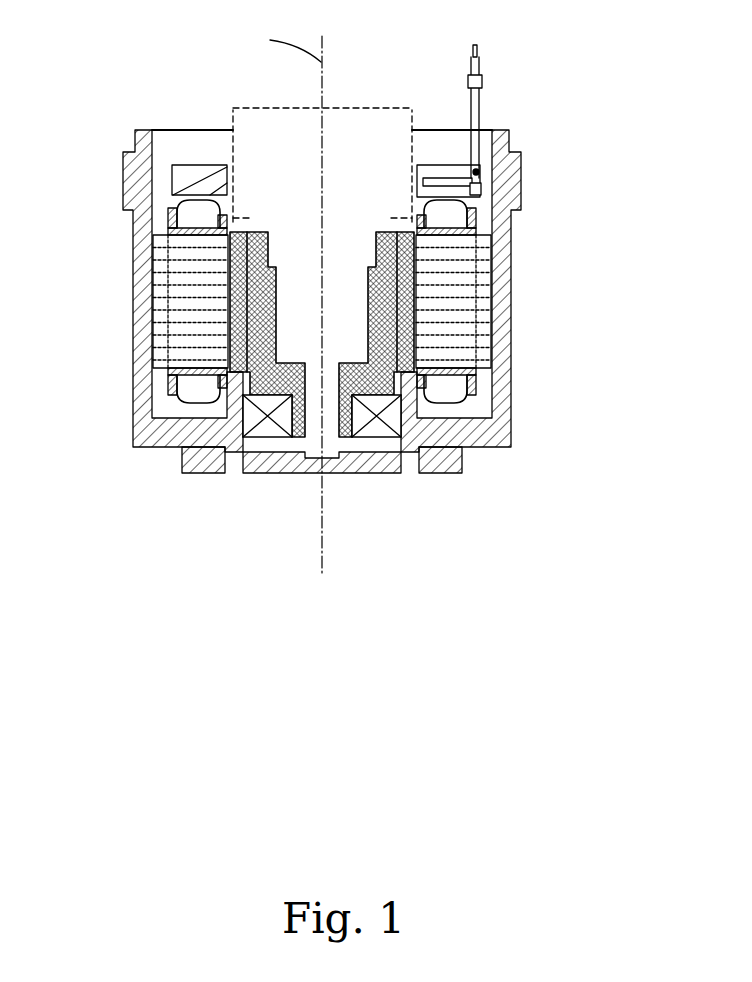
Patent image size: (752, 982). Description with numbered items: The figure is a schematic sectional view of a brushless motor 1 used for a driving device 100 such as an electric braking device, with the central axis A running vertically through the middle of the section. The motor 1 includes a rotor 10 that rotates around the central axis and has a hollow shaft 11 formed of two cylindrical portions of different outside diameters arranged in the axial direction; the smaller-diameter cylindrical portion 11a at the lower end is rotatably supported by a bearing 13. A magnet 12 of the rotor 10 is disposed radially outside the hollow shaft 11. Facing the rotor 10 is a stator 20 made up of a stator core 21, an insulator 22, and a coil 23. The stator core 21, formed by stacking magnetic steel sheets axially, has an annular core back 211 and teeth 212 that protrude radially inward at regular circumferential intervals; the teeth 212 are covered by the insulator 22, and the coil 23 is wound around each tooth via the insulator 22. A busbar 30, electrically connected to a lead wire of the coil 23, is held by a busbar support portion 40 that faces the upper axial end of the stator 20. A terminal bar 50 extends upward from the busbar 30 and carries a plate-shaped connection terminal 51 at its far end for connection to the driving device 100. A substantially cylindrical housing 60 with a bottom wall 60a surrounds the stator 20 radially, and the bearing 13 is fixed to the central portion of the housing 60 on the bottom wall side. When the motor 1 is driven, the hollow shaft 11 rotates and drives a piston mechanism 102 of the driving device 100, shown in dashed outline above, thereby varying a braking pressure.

The motor 1 is at (560, 92).
The rotor 10 is at (403, 229).
The hollow shaft 11 is at (417, 328).
The cylindrical portion 11a is at (357, 445).
The magnet 12 is at (420, 283).
The bearing 13 is at (403, 420).
The stator 20 is at (160, 226).
The stator core 21 is at (152, 240).
The core back 211 is at (165, 272).
The teeth 212 is at (182, 333).
The insulator 22 is at (182, 378).
The coil 23 is at (198, 393).
The busbar 30 is at (480, 189).
The busbar support portion 40 is at (477, 170).
The terminal bar 50 is at (481, 82).
The connection terminal 51 is at (472, 48).
The housing 60 is at (137, 131).
The bottom wall 60a is at (182, 457).
The driving device 100 is at (270, 133).
The piston mechanism 102 is at (233, 108).